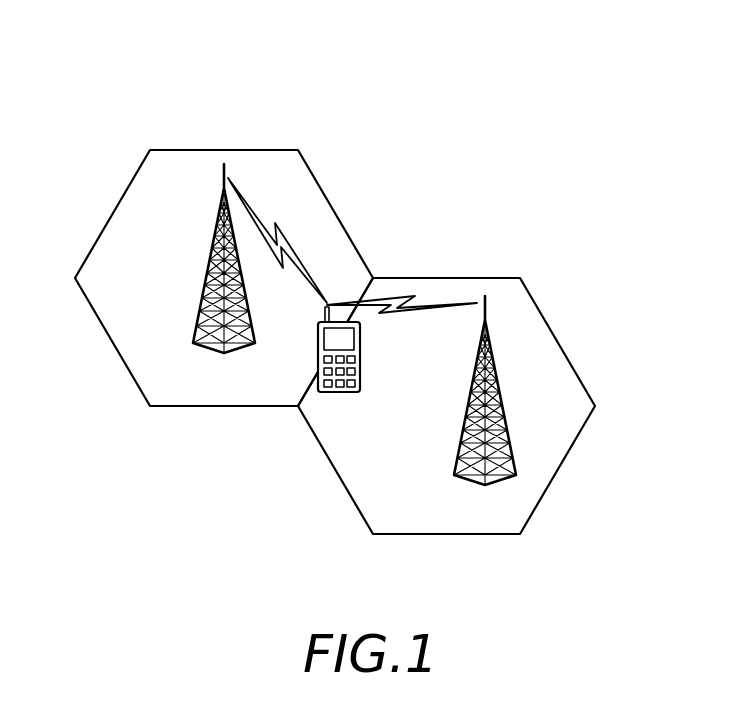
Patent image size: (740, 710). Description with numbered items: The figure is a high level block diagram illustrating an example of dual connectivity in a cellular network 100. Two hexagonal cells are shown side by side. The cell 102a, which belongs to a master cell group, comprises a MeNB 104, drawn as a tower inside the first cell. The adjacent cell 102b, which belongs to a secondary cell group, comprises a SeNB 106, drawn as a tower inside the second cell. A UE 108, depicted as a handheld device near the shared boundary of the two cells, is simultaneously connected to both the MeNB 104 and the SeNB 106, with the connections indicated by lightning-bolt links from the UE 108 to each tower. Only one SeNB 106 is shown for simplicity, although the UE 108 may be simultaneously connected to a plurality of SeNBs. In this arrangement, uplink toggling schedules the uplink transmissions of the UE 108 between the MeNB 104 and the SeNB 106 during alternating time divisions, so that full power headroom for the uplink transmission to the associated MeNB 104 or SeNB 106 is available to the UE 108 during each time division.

The cellular network 100 is at (545, 115).
The cell 102a is at (112, 342).
The cell 102b is at (557, 469).
The MeNB 104 is at (207, 263).
The SeNB 106 is at (466, 403).
The UE 108 is at (348, 393).